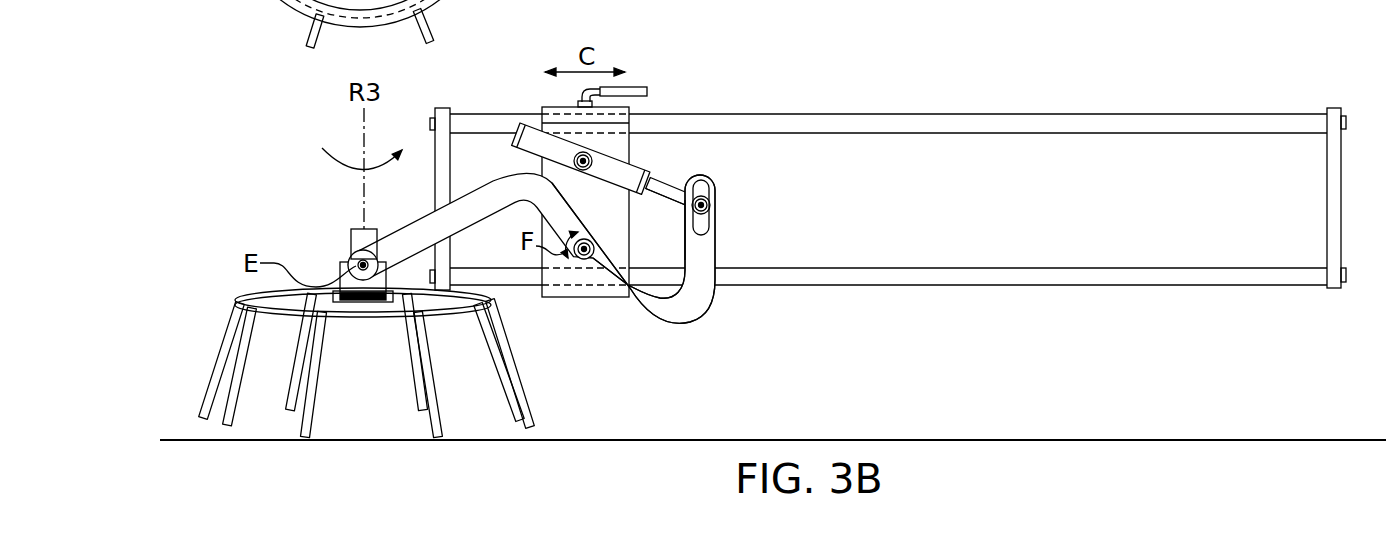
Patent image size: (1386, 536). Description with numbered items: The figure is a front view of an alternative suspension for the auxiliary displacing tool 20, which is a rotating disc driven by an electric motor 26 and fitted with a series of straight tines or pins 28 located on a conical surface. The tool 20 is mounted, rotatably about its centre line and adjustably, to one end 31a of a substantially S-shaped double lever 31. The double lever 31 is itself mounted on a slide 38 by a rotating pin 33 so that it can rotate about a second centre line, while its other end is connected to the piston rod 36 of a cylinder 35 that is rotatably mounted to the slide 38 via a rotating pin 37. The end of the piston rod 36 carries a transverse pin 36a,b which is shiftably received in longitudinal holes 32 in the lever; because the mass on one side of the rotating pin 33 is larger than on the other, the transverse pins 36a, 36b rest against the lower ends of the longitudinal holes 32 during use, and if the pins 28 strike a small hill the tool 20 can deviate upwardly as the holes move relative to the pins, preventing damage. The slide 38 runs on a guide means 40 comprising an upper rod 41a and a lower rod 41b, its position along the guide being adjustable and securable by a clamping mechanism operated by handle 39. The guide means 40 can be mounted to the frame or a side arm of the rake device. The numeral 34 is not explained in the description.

The auxiliary displacing tool 20 is at (322, 243).
The electric motor 26 is at (362, 240).
The tines or pins 28 is at (213, 413).
The double lever 31 is at (447, 220).
The end of the double lever 31a is at (437, 12).
The longitudinal holes 32 is at (701, 189).
The rotating pin 33 is at (582, 259).
The container 34 is at (586, 5).
The cylinder 35 is at (670, 193).
The piston rod 36 is at (670, 193).
The transverse pin 36a is at (776, 213).
The transverse pin 36b is at (708, 204).
The transverse pin 36a,b is at (776, 213).
The rotating pin 37 is at (621, 178).
The slide 38 is at (615, 142).
The handle 39 is at (632, 90).
The guide means 40 is at (888, 201).
The upper rod 41a is at (1235, 125).
The lower rod 41b is at (1233, 276).